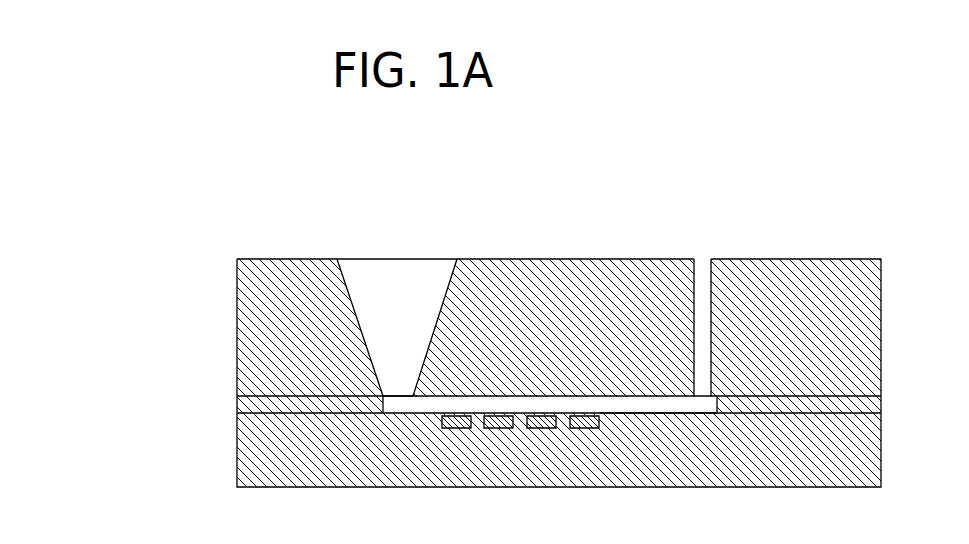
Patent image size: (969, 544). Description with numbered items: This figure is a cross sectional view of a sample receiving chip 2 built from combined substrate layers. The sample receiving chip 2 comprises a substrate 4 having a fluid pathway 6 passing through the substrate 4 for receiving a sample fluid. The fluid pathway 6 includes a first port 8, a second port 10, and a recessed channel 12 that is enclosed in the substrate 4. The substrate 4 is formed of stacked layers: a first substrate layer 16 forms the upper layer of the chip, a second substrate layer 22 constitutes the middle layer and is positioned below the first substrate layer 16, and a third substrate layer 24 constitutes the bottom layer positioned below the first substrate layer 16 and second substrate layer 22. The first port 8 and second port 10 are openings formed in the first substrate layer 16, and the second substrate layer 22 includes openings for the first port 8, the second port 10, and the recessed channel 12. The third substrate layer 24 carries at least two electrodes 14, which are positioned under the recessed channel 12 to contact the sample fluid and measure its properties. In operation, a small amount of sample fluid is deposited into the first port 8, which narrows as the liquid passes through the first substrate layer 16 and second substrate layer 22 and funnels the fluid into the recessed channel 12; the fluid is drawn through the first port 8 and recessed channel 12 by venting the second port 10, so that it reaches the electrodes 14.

The sample receiving chip 2 is at (215, 125).
The substrate 4 is at (105, 267).
The fluid pathway 6 is at (571, 265).
The first port 8 is at (399, 306).
The second port 10 is at (704, 270).
The recessed channel 12 is at (650, 413).
The electrodes 14 is at (452, 428).
The first substrate layer 16 is at (314, 327).
The second substrate layer 22 is at (256, 406).
The third substrate layer 24 is at (314, 448).